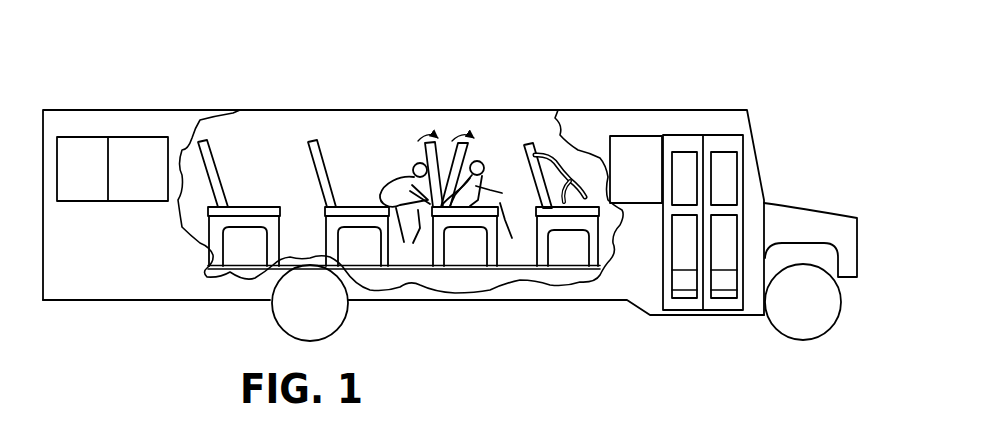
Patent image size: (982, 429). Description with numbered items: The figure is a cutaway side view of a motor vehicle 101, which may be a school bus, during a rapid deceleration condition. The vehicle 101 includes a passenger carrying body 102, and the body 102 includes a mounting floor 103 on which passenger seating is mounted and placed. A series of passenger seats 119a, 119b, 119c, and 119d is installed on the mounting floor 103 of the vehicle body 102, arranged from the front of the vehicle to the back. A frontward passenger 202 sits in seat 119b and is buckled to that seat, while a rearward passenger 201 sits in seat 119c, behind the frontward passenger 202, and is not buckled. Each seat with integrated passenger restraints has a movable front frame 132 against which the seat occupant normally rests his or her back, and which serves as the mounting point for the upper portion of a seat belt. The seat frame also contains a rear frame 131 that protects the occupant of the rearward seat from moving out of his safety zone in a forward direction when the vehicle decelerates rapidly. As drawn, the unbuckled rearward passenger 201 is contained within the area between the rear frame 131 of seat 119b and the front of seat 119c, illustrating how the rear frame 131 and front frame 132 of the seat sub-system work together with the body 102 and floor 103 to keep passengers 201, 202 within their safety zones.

The motor vehicle 101 is at (688, 108).
The passenger carrying body 102 is at (610, 298).
The mounting floor 103 is at (422, 268).
The passenger seat 119a is at (553, 255).
The passenger seat 119b is at (504, 253).
The passenger seat 119c is at (326, 158).
The passenger seat 119d is at (217, 168).
The rear frame 131 is at (437, 140).
The front frame 132 is at (473, 139).
The rearward passenger 201 is at (397, 175).
The frontward passenger 202 is at (490, 161).